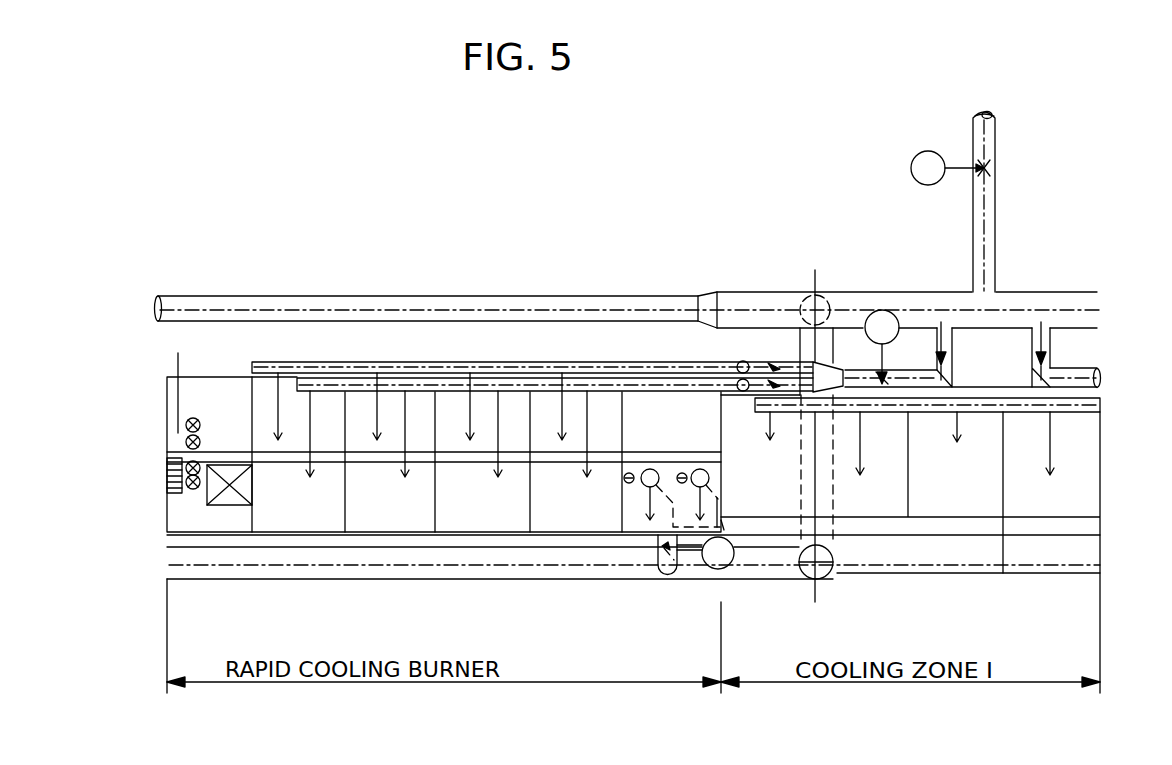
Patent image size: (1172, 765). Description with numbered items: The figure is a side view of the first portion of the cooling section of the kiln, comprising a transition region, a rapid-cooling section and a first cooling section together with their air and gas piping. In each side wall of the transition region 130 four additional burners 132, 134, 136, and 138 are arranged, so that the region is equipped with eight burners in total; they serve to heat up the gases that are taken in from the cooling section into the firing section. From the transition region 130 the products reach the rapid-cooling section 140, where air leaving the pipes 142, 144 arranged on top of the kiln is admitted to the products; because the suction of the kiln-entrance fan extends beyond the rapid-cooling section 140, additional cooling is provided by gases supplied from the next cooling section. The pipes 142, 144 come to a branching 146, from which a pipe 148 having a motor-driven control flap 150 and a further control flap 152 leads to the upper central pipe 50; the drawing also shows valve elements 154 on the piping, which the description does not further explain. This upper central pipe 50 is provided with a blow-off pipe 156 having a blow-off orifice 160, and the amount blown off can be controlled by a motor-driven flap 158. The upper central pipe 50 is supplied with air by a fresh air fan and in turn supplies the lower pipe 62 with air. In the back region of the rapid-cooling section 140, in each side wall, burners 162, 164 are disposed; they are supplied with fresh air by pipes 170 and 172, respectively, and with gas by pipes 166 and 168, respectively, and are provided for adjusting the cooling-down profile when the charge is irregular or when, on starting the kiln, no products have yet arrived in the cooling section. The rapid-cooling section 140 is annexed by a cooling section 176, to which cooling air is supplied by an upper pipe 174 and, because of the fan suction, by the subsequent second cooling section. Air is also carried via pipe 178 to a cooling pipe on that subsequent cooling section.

The upper central pipe 50 is at (395, 296).
The lower pipe 62 is at (437, 571).
The transition region 130 is at (205, 377).
The additional burner 132 is at (186, 420).
The additional burner 134 is at (186, 443).
The additional burner 136 is at (167, 475).
The additional burner 138 is at (176, 494).
The rapid-cooling section 140 is at (330, 537).
The pipe 142 is at (308, 367).
The pipe 144 is at (358, 383).
The branching 146 is at (826, 374).
The pipe 148 is at (918, 382).
The control flap 150 is at (884, 385).
The control flap 152 is at (952, 353).
The valve 154 is at (805, 347).
The blow-off pipe 156 is at (975, 243).
The motor-driven flap 158 is at (989, 173).
The blow-off orifice 160 is at (990, 114).
The burner 162 is at (650, 469).
The burner 164 is at (700, 469).
The gas pipe 166 is at (650, 506).
The gas pipe 168 is at (724, 526).
The fresh air pipe 170 is at (668, 525).
The fresh air pipe 172 is at (718, 498).
The upper pipe 174 is at (1034, 405).
The cooling section 176 is at (1003, 517).
The pipe 178 is at (1100, 377).